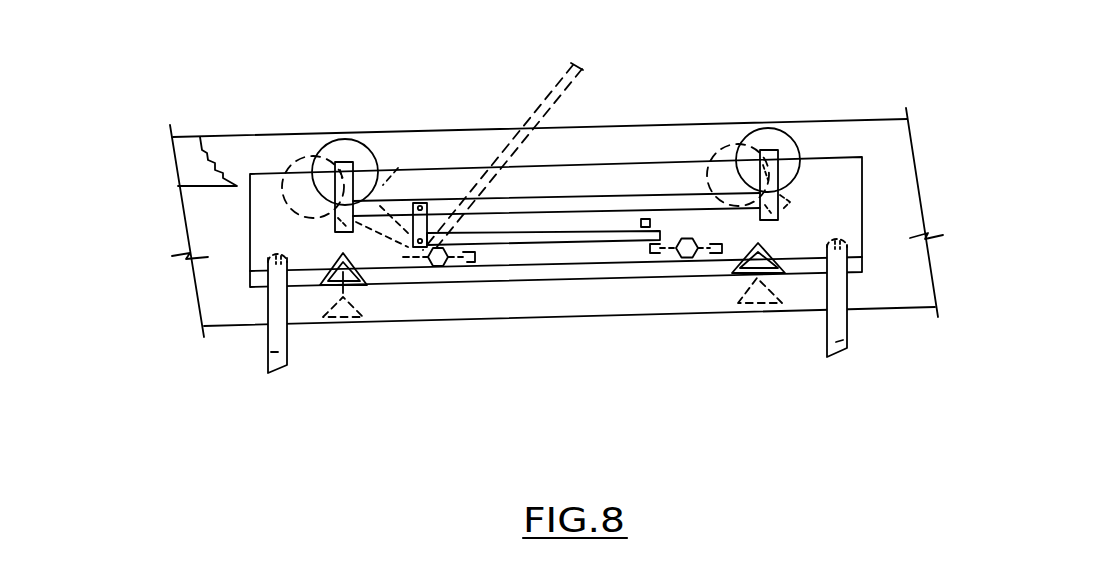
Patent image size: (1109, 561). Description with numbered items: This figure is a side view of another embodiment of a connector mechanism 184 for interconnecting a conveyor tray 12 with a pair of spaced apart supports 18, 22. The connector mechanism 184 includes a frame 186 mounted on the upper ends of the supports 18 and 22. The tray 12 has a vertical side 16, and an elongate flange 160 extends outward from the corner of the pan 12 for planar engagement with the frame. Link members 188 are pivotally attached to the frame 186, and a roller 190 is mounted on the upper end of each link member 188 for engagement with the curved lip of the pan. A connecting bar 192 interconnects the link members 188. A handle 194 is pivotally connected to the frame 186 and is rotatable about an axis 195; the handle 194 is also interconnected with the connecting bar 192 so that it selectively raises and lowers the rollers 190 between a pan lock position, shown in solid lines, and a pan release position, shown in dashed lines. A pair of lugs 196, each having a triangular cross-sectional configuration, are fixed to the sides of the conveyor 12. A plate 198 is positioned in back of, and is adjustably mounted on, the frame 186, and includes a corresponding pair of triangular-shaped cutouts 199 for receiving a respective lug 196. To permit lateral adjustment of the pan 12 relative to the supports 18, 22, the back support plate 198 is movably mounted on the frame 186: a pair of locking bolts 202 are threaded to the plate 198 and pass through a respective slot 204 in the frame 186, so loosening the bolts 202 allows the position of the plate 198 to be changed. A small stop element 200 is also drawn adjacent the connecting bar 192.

The tray 12 is at (230, 327).
The vertical side 16 is at (207, 228).
The elongate flange 160 is at (188, 165).
The support 18 is at (853, 340).
The support 22 is at (267, 352).
The connector mechanism 184 is at (627, 340).
The frame 186 is at (850, 170).
The link member 188 is at (398, 167).
The roller 190 is at (340, 150).
The connecting bar 192 is at (510, 207).
The handle 194 is at (590, 240).
The axis 195 is at (408, 250).
The lug 196 is at (343, 312).
The plate 198 is at (722, 265).
The triangular-shaped cutout 199 is at (732, 277).
The stop 200 is at (643, 218).
The locking bolt 202 is at (440, 257).
The slot 204 is at (467, 262).